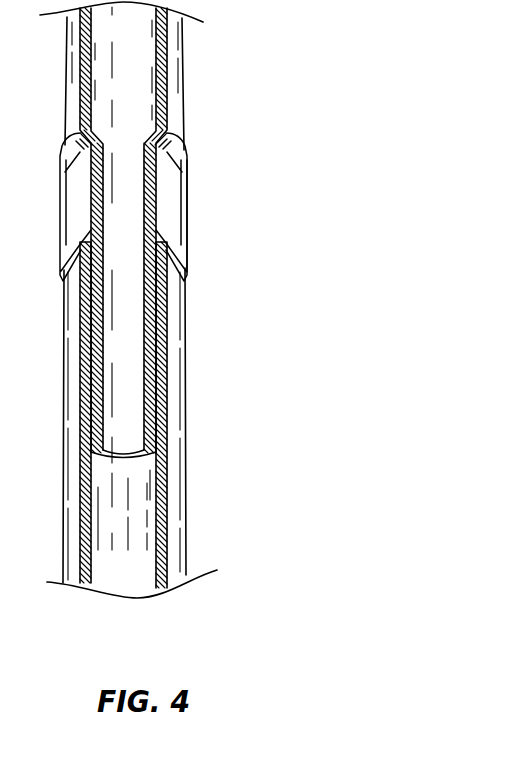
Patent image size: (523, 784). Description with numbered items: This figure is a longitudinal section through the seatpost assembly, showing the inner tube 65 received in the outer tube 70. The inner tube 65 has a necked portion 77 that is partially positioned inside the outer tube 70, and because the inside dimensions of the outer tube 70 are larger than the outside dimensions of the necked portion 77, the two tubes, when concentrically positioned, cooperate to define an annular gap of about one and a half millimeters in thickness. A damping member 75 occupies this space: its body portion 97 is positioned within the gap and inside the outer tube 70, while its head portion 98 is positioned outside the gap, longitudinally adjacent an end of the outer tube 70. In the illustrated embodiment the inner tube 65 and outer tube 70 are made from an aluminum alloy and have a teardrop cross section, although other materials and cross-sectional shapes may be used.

The inner tube 65 is at (170, 52).
The outer tube 70 is at (175, 555).
The damping member 75 is at (187, 167).
The necked portion 77 is at (133, 347).
The body portion 97 is at (153, 438).
The head portion 98 is at (187, 215).